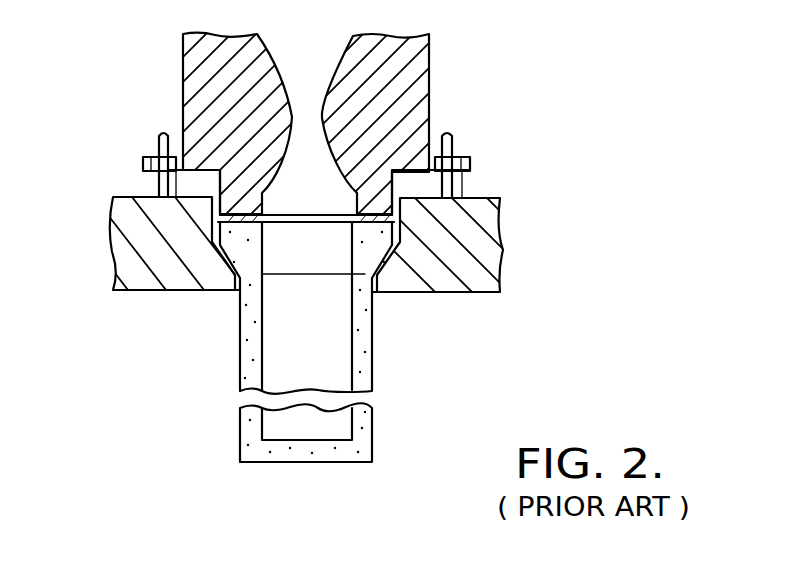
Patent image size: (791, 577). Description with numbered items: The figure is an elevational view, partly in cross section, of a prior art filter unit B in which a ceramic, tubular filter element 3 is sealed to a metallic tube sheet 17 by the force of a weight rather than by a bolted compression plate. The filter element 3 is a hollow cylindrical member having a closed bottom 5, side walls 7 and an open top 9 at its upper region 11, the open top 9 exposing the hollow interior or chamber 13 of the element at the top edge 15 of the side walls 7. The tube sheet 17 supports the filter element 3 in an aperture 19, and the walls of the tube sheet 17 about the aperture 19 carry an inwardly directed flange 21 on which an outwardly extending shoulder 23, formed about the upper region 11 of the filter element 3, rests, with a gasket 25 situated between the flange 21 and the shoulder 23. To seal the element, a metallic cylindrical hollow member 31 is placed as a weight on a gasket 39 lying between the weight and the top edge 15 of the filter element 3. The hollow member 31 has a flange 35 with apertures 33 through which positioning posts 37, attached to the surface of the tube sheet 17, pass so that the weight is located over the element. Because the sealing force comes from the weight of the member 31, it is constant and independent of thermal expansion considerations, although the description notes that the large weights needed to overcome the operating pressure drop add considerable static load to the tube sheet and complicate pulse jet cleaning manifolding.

The filter unit B is at (448, 62).
The ceramic tubular filter element 3 is at (201, 364).
The closed bottom 5 is at (315, 462).
The side walls 7 is at (366, 333).
The open top 9 is at (325, 183).
The upper region 11 is at (388, 285).
The hollow interior or chamber 13 is at (323, 340).
The top edge 15 is at (395, 261).
The tube sheet 17 is at (112, 277).
The aperture 19 is at (237, 292).
The inwardly directed flange 21 is at (223, 292).
The outwardly extending shoulder 23 is at (197, 290).
The gasket 25 is at (393, 258).
The metallic cylindrical hollow member 31 is at (418, 104).
The apertures 33 is at (158, 157).
The flange 35 is at (143, 155).
The positioning posts 37 is at (165, 178).
The gasket 39 is at (215, 228).